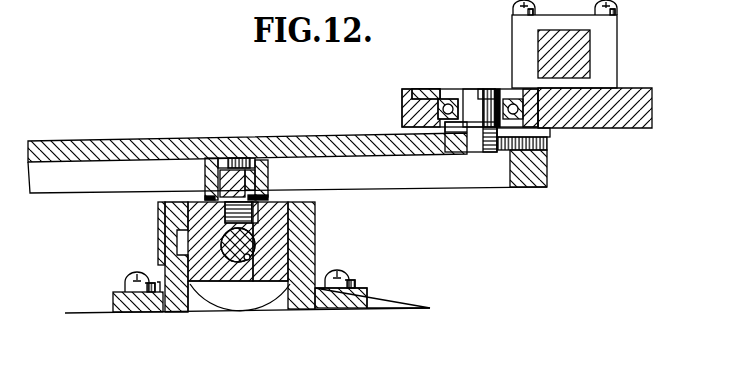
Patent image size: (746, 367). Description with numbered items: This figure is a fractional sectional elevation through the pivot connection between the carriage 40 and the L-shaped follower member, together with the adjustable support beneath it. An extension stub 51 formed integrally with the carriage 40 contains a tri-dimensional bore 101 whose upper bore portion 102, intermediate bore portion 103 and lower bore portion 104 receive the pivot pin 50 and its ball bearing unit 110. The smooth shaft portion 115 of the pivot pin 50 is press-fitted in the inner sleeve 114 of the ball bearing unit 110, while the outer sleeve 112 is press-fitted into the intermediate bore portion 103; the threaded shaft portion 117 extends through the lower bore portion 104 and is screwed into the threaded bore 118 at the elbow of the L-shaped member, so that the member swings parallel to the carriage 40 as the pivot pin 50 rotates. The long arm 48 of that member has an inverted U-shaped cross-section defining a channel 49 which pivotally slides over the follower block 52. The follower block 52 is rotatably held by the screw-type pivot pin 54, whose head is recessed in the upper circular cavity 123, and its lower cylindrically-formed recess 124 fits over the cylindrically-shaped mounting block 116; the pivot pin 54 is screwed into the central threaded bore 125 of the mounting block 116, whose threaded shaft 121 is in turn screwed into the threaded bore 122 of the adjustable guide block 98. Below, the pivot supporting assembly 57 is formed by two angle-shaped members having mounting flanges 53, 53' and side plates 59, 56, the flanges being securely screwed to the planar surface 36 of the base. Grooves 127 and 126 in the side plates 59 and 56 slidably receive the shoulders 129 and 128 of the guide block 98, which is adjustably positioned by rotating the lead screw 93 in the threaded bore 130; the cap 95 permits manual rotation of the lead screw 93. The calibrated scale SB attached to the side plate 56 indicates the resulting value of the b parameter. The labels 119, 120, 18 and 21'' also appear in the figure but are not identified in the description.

The long arm 48 is at (166, 141).
The channel 49 is at (66, 168).
The upper circular cavity 123 is at (216, 160).
The follower block 52 is at (262, 168).
The screw-type pivot pin 54 is at (232, 160).
The central threaded bore 125 is at (232, 178).
The lower cylindrically-formed recess 124 is at (255, 186).
The mounting block 116 is at (265, 198).
The groove 126 is at (182, 233).
The shoulder 128 is at (182, 249).
The calibrated scale SB is at (160, 258).
The lead screw 93 is at (248, 260).
The threaded bore 122 is at (245, 221).
The threaded shaft 121 is at (262, 210).
The groove 127 is at (298, 230).
The shoulder 129 is at (295, 252).
The threaded bore 130 is at (278, 298).
The adjustable guide block 98 is at (203, 288).
The cap 95 is at (277, 298).
The mounting flange 53 is at (247, 298).
The planar surface 36 is at (408, 300).
The pivot supporting assembly 57 is at (354, 314).
The mounting flange 53' is at (112, 302).
The side plate 56 is at (165, 282).
The side plate 59 is at (350, 285).
The pivot pin 50 is at (465, 90).
The upper bore portion 102 is at (416, 92).
The extension stub 51 is at (405, 95).
The tri-dimensional bore 101 is at (428, 106).
The intermediate bore portion 103 is at (440, 113).
The smooth shaft portion 115 is at (470, 112).
The ball bearing unit 110 is at (538, 103).
The carriage 40 is at (655, 106).
The outer sleeve 112 is at (525, 115).
The inner sleeve 114 is at (560, 124).
The lower bore portion 104 is at (457, 128).
The threaded bore 118 is at (468, 148).
The threaded shaft portion 117 is at (485, 152).
The serration 119 is at (545, 151).
The block 120 is at (528, 188).
The solenoid housing 21'' is at (585, 44).
The coil 18 is at (592, 60).